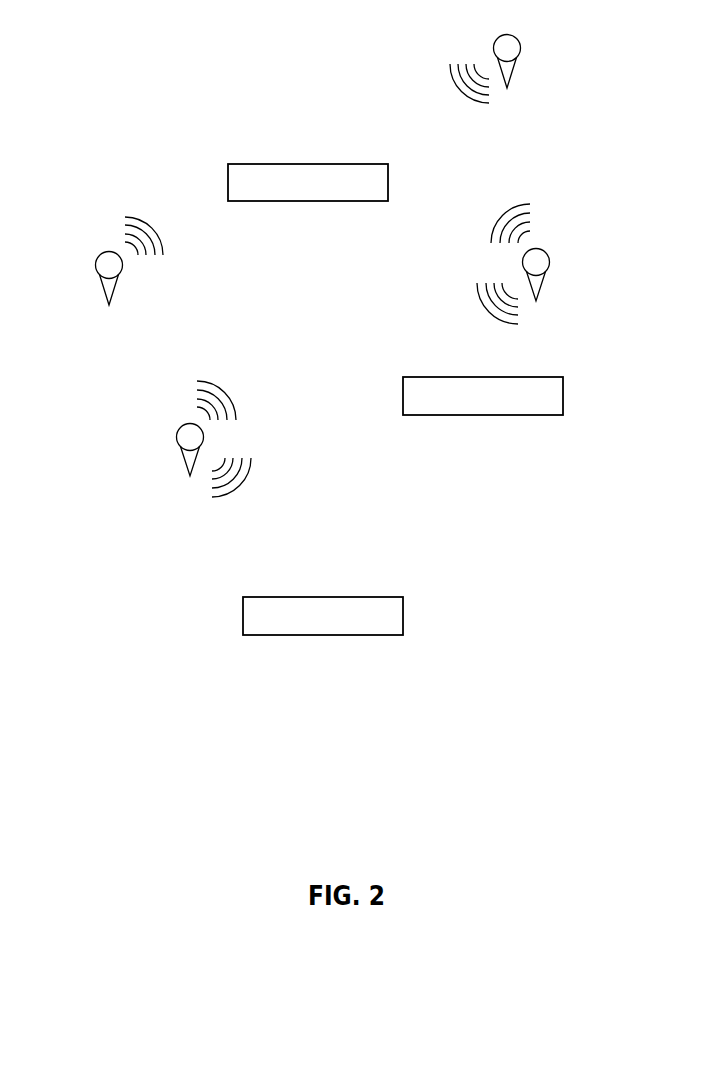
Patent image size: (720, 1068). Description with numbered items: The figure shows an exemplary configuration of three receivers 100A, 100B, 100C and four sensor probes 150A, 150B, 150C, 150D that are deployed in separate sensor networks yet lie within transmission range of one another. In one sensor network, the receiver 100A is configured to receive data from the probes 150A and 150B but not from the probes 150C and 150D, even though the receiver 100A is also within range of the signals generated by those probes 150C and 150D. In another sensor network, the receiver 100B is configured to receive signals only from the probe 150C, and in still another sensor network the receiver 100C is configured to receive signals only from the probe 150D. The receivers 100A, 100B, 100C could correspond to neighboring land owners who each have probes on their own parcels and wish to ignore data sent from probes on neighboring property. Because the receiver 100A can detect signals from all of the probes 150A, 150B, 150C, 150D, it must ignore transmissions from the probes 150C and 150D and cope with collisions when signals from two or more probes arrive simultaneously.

The receiver 100A is at (363, 164).
The receiver 100B is at (368, 597).
The receiver 100C is at (528, 377).
The probe 150A is at (102, 279).
The probe 150B is at (513, 62).
The probe 150C is at (183, 453).
The probe 150D is at (545, 275).